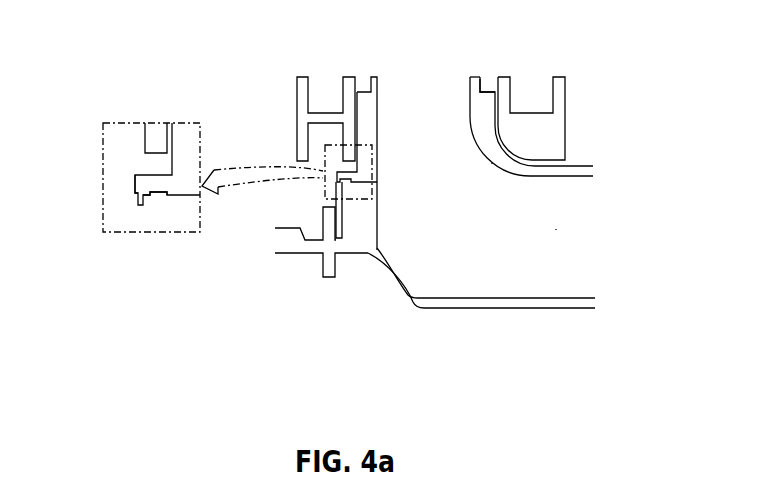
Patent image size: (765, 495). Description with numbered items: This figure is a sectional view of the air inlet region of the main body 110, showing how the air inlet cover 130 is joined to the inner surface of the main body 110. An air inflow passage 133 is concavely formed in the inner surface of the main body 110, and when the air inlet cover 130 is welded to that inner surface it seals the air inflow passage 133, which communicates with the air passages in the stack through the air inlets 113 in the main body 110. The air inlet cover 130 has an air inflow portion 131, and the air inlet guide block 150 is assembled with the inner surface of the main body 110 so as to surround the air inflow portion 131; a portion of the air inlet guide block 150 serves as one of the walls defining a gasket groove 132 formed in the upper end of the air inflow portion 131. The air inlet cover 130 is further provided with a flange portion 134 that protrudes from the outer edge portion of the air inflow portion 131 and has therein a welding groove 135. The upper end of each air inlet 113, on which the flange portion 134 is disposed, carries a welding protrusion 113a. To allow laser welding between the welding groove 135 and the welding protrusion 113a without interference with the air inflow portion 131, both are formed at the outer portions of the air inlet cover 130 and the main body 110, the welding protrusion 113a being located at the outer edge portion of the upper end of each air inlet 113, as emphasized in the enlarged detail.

The main body 110 is at (438, 323).
The air inlet 113 is at (378, 212).
The welding protrusion 113a is at (148, 195).
The air inlet cover 130 is at (491, 178).
The air inflow portion 131 is at (477, 112).
The gasket groove 132 is at (487, 84).
The air inflow passage 133 is at (558, 241).
The flange portion 134 is at (140, 185).
The welding groove 135 is at (143, 197).
The air inlet guide block 150 is at (565, 122).